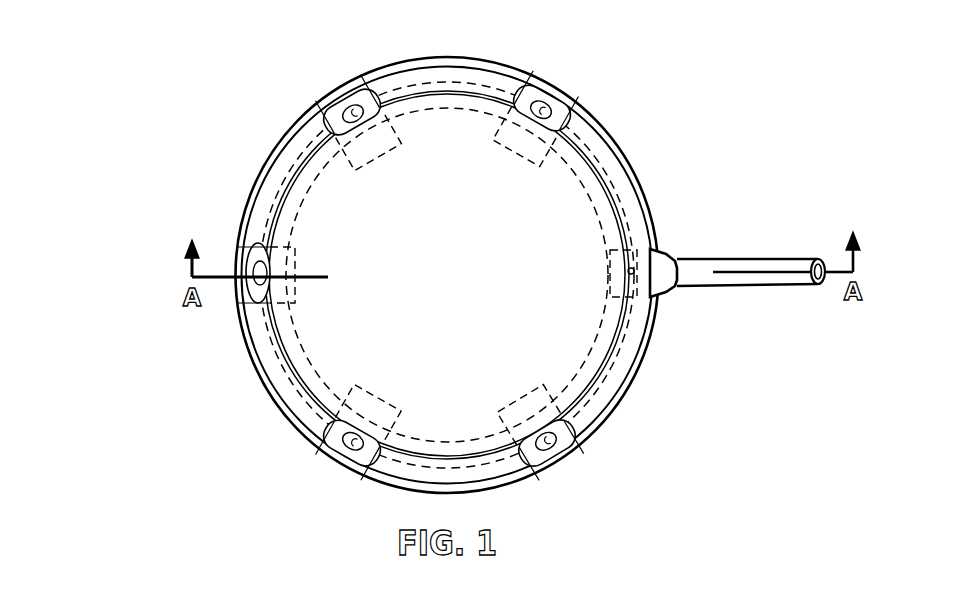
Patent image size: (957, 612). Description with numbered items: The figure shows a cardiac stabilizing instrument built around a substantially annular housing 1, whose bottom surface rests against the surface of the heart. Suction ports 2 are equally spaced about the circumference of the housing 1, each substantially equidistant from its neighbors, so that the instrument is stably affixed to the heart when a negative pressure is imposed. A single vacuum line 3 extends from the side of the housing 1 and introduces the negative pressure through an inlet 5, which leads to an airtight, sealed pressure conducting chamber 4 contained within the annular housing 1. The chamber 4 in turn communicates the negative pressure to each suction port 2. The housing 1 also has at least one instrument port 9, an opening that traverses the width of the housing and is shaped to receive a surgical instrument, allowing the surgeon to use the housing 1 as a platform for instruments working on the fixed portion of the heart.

The annular housing 1 is at (265, 164).
The suction port 2 is at (533, 422).
The vacuum line 3 is at (740, 263).
The pressure conducting chamber 4 is at (603, 386).
The inlet 5 is at (662, 298).
The instrument port 9 is at (568, 108).